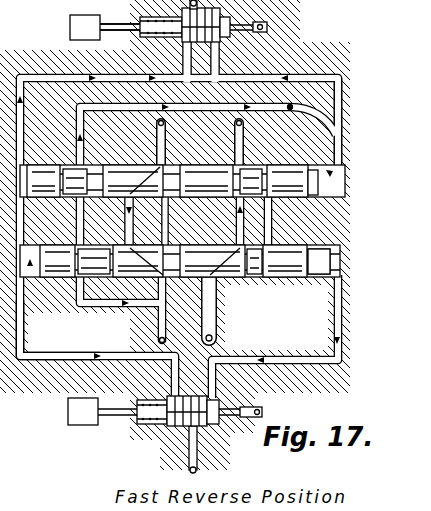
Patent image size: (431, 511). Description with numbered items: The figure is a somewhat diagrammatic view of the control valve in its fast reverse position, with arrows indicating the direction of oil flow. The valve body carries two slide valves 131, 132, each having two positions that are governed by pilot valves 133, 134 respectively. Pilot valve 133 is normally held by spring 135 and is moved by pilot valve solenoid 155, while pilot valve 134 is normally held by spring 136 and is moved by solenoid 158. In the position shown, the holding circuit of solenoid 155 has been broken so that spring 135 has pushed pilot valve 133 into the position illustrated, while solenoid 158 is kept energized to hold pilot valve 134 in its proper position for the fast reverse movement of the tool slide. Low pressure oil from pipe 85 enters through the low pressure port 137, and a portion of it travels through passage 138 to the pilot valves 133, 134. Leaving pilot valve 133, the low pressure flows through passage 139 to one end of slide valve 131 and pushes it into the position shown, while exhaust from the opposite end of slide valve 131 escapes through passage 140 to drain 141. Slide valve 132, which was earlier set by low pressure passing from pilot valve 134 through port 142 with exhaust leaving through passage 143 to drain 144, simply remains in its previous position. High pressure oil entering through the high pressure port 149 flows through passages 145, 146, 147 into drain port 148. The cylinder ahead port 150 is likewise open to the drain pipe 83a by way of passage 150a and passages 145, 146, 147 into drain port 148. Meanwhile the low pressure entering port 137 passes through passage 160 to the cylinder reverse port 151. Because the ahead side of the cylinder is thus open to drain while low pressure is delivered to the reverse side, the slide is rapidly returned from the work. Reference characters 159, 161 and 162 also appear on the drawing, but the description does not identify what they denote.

The pilot valve solenoid 155 is at (70, 23).
The pilot valve solenoid 158 is at (68, 418).
The passage 138 is at (140, 20).
The low pressure pipe 85 is at (197, 9).
The pilot valve 133 is at (247, 25).
The spring 135 is at (150, 40).
The drain 141 is at (262, 35).
The passage 139 is at (298, 72).
The drain pipe 83a is at (267, 27).
The passage 140 is at (56, 60).
The passage 147 is at (80, 110).
The drain port 148 is at (343, 100).
The curved connecting passage 162 is at (289, 108).
The cylinder ahead port 150 is at (129, 146).
The cylinder reverse port 151 is at (208, 146).
The passage 150a is at (125, 210).
The passage 146 is at (62, 241).
The transfer passage 159 is at (168, 217).
The passage 160 is at (193, 221).
The slide valve 131 is at (305, 197).
The right transfer passages 161 is at (268, 230).
The slide valve 132 is at (352, 250).
The port 142 is at (342, 315).
The low pressure port 137 is at (215, 337).
The passage 145 is at (100, 310).
The high pressure port 149 is at (157, 340).
The passage 143 is at (58, 363).
The spring 136 is at (150, 399).
The pilot valve 134 is at (173, 433).
The drain 144 is at (230, 402).